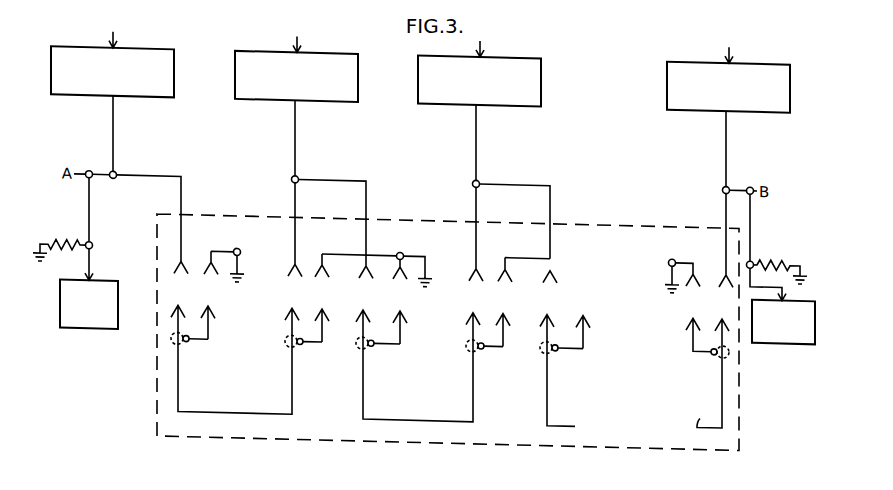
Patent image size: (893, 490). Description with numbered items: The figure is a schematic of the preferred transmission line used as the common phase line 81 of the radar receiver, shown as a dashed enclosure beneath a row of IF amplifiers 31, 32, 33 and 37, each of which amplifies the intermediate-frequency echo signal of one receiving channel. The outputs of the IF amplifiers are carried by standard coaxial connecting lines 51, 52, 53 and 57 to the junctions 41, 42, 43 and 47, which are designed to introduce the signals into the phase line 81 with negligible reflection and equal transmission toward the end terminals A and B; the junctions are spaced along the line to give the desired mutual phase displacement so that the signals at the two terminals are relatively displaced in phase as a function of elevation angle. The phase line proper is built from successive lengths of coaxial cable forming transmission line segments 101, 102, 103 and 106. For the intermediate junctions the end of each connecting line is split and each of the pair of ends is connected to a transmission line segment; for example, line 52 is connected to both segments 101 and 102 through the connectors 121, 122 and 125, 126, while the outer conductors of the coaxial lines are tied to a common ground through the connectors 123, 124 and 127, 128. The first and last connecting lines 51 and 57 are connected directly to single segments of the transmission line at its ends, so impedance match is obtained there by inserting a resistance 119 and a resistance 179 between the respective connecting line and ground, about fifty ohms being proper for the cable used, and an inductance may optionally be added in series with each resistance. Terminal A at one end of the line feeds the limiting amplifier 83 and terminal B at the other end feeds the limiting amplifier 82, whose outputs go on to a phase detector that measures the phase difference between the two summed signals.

The IF amplifier 31 is at (174, 69).
The IF amplifier 32 is at (358, 69).
The IF amplifier 33 is at (541, 69).
The IF amplifier 37 is at (667, 69).
The coaxial connecting line 51 is at (113, 119).
The coaxial connecting line 52 is at (295, 118).
The coaxial connecting line 53 is at (476, 120).
The coaxial connecting line 57 is at (726, 120).
The junction 41 is at (113, 176).
The junction 42 is at (292, 172).
The junction 43 is at (472, 172).
The junction 47 is at (722, 172).
The common phase line 81 is at (120, 427).
The limiting amplifier 82 is at (783, 324).
The limiting amplifier 83 is at (88, 326).
The resistance 119 is at (66, 241).
The resistance 179 is at (771, 241).
The transmission line segment 101 is at (230, 407).
The transmission line segment 102 is at (414, 410).
The transmission line segment 103 is at (568, 412).
The transmission line segment 106 is at (704, 373).
The connector 121 is at (289, 263).
The connector 122 is at (289, 309).
The connector 123 is at (320, 259).
The connector 124 is at (327, 309).
The connector 125 is at (362, 263).
The connector 126 is at (360, 305).
The connector 127 is at (403, 266).
The connector 128 is at (397, 305).